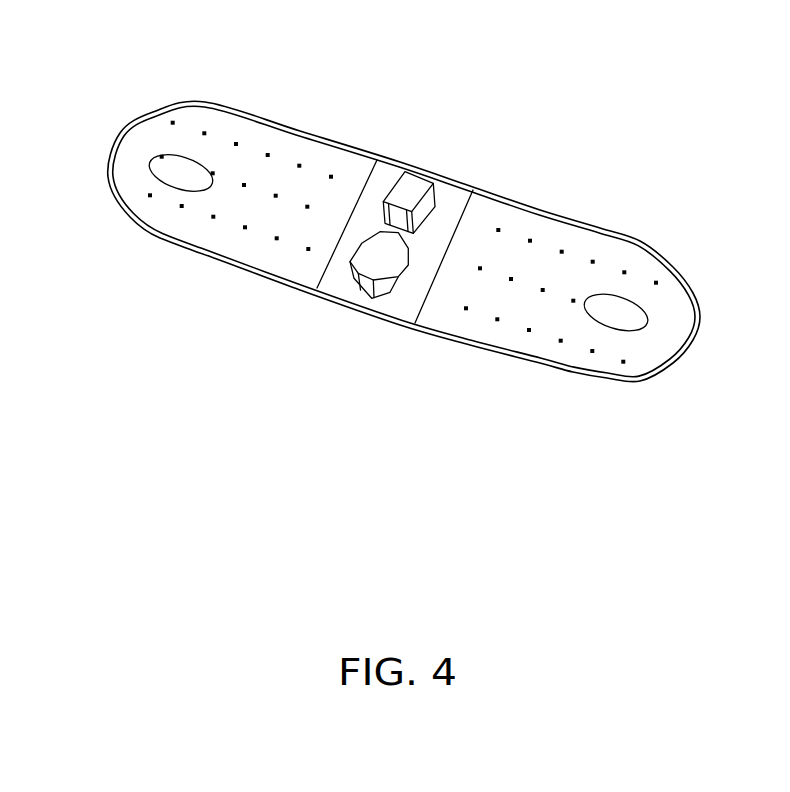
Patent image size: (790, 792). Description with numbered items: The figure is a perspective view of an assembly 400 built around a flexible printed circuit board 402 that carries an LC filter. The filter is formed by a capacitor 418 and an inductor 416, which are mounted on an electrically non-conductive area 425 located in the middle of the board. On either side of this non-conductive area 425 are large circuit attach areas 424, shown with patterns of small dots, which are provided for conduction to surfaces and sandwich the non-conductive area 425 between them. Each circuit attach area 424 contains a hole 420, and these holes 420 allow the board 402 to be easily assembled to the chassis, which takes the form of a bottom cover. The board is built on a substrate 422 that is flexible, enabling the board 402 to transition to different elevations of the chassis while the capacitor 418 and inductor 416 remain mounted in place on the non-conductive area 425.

The heating pad assembly 400 is at (417, 634).
The flexible printed circuit board 402 is at (232, 413).
The inductor 416 is at (372, 252).
The capacitor 418 is at (412, 183).
The holes 420 is at (180, 173).
The substrate 422 is at (452, 198).
The circuit attach areas 424 is at (160, 213).
The electrically non-conductive area 425 is at (402, 303).